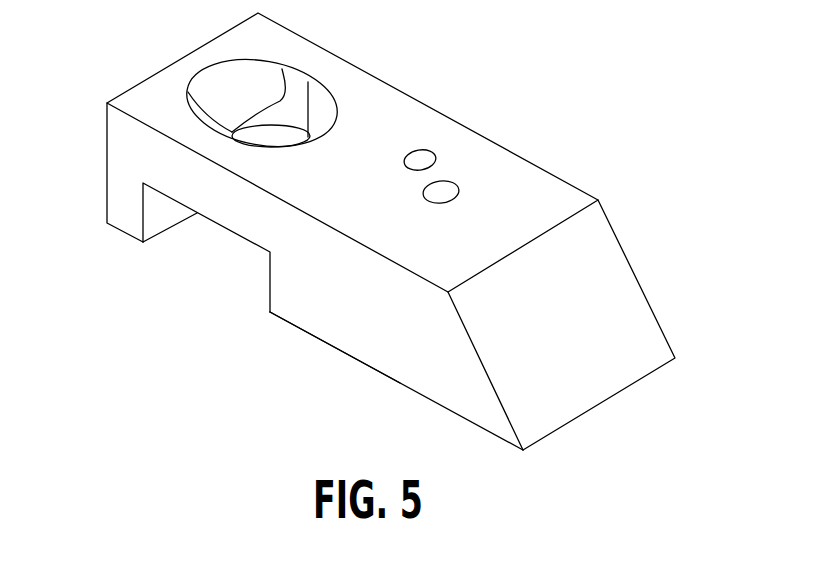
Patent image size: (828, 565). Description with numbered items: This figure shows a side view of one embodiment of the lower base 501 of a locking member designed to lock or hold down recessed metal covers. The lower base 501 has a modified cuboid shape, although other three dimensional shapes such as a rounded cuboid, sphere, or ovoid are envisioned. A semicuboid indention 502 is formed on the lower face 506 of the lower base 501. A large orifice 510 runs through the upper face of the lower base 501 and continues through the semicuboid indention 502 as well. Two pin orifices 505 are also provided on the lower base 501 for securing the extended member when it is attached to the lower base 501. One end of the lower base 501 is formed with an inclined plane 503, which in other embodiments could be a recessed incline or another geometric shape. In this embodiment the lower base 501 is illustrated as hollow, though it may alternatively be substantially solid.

The lower base 501 is at (105, 152).
The semicuboid indention 502 is at (225, 237).
The inclined plane 503 is at (588, 280).
The pin orifices 505 is at (420, 160).
The lower face 506 is at (340, 352).
The large orifice 510 is at (297, 93).